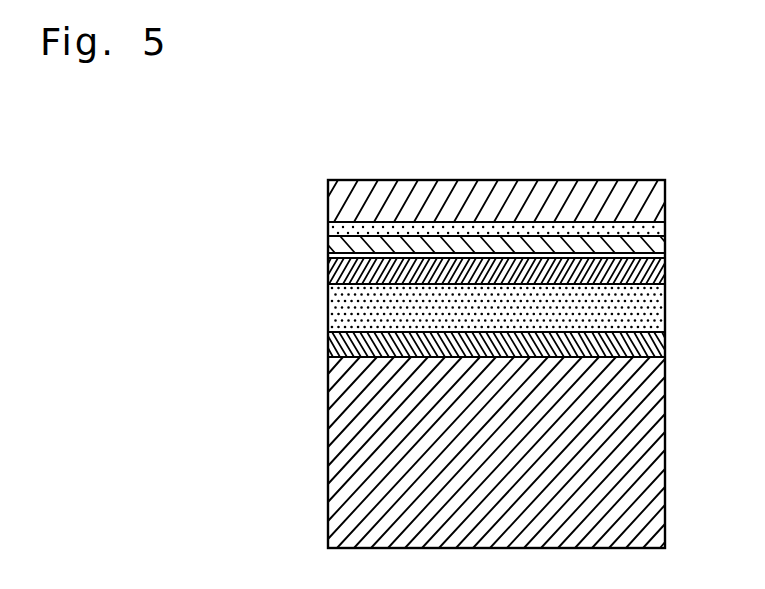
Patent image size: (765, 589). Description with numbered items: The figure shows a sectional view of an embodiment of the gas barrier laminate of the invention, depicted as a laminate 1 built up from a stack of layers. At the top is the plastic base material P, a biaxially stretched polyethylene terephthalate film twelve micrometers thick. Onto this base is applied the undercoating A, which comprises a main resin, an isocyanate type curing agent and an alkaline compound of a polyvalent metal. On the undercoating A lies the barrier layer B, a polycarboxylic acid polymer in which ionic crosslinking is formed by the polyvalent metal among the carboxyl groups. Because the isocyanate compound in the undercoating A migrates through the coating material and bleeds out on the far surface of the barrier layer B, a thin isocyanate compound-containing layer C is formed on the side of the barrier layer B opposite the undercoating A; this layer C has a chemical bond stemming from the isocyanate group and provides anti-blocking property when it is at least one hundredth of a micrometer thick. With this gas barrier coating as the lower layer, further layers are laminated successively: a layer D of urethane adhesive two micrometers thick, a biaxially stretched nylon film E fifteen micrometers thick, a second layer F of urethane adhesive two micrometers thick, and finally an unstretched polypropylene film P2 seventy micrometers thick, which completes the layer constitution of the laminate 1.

The laminate 1 is at (595, 174).
The plastic base material P is at (648, 197).
The undercoating A is at (657, 229).
The barrier layer B is at (658, 243).
The isocyanate compound-containing layer C is at (656, 257).
The urethane adhesive layer D is at (658, 273).
The biaxially stretched nylon film E is at (655, 312).
The urethane adhesive layer F is at (657, 347).
The unstretched polypropylene film P2 is at (648, 470).